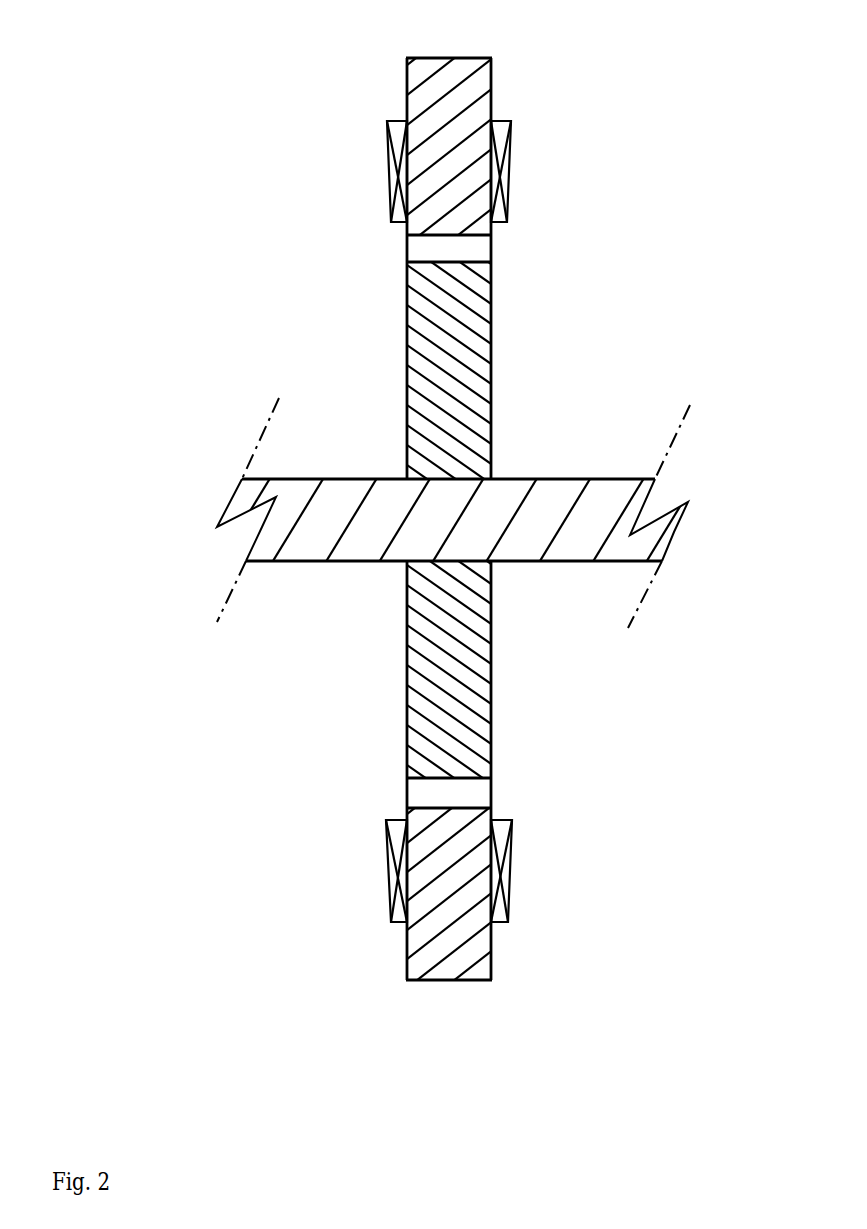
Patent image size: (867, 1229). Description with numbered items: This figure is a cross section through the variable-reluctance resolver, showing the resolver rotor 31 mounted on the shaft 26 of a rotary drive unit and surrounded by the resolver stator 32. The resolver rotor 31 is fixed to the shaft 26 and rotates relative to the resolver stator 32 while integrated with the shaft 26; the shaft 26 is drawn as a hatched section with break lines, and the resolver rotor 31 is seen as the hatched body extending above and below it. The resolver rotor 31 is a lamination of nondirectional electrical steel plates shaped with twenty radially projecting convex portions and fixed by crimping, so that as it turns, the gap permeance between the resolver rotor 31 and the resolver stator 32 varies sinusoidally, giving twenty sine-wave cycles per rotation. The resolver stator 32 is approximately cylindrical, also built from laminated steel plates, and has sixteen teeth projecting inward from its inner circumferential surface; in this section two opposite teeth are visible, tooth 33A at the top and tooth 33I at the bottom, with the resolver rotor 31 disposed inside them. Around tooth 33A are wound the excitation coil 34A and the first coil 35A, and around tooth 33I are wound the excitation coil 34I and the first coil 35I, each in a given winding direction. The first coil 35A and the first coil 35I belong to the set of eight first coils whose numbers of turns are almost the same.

The shaft 26 is at (550, 561).
The resolver rotor 31 is at (493, 395).
The resolver stator 32 is at (588, 178).
The tooth 33A is at (408, 250).
The tooth 33I is at (408, 795).
The excitation coil 34A is at (497, 140).
The first coil 35A is at (510, 177).
The excitation coil 34I is at (489, 842).
The first coil 35I is at (513, 887).